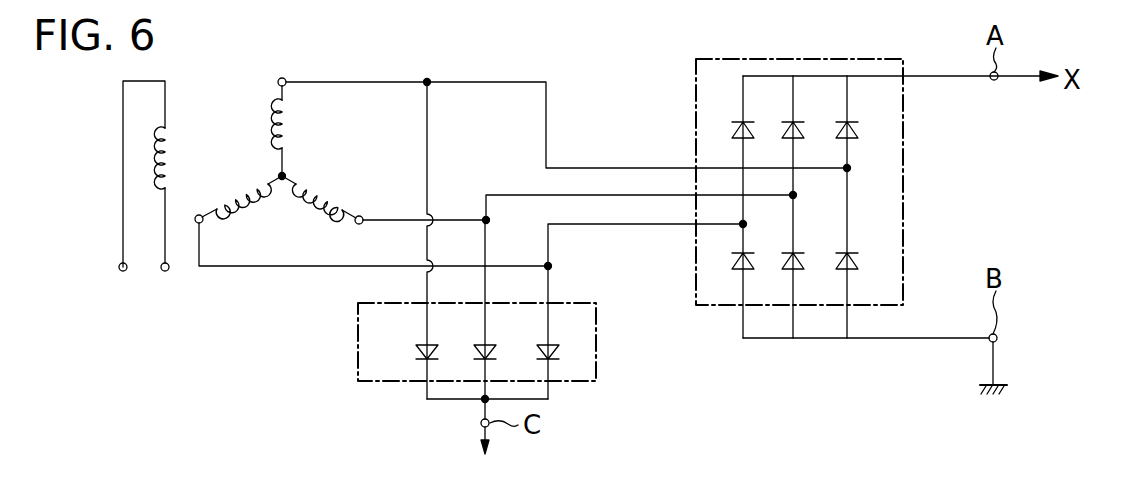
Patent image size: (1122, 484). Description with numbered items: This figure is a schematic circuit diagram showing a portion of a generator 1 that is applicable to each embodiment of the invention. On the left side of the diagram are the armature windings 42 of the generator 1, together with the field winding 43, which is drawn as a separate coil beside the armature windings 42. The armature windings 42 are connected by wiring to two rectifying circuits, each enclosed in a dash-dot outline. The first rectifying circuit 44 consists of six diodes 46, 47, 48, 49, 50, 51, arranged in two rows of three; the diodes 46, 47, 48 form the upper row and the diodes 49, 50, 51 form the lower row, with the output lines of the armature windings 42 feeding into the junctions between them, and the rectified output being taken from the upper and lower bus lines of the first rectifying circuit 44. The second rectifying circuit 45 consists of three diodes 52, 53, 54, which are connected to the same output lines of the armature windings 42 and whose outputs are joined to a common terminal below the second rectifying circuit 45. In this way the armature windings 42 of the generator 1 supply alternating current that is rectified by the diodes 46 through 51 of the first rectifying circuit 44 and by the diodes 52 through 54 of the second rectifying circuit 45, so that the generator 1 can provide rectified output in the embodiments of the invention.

The generator 1 is at (239, 104).
The armature windings 42 is at (290, 124).
The field winding 43 is at (172, 150).
The first rectifying circuit 44 is at (903, 135).
The second rectifying circuit 45 is at (596, 311).
The diode 46 is at (752, 131).
The diode 47 is at (810, 207).
The diode 48 is at (858, 133).
The diode 49 is at (752, 264).
The diode 50 is at (801, 265).
The diode 51 is at (853, 265).
The diode 52 is at (422, 344).
The diode 53 is at (476, 344).
The diode 54 is at (540, 344).